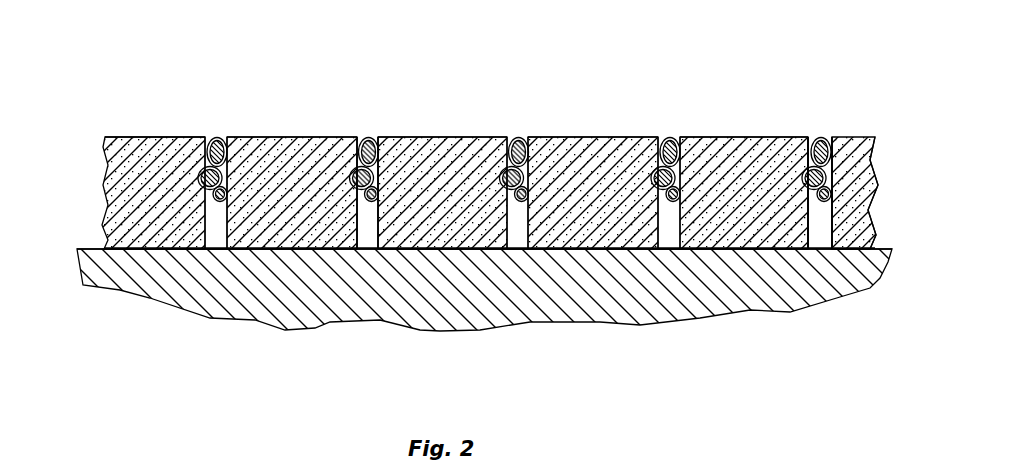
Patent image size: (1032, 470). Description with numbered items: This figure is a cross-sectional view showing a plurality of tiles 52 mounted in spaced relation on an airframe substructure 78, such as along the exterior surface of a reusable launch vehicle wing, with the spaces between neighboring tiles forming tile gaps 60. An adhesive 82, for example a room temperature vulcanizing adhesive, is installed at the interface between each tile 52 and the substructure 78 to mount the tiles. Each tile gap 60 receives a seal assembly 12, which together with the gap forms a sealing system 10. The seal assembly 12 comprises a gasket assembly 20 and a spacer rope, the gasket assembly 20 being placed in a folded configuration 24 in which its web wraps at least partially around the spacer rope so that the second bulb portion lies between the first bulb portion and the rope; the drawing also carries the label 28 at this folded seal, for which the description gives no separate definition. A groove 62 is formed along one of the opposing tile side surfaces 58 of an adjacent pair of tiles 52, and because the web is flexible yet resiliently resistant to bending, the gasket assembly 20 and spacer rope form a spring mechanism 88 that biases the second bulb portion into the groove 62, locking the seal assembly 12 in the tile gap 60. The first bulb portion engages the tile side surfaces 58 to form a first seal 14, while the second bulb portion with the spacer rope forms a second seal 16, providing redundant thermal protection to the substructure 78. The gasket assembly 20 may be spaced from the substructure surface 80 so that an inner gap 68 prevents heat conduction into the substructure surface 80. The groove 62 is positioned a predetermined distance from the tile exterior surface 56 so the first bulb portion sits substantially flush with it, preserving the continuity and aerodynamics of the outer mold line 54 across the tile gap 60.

The sealing system 10 is at (525, 128).
The seal assembly 12 is at (217, 138).
The first seal 14 is at (841, 138).
The second seal 16 is at (838, 215).
The gasket assembly 20 is at (865, 132).
The folded configuration 24 is at (865, 132).
The seal element 28 is at (865, 132).
The spring mechanism 88 is at (836, 137).
The tile 52 is at (118, 166).
The outer mold line 54 is at (456, 105).
The tile exterior surface 56 is at (163, 136).
The tile side surface 58 is at (238, 137).
The tile gap 60 is at (370, 222).
The groove 62 is at (187, 137).
The inner gap 68 is at (213, 215).
The substructure 78 is at (768, 292).
The substructure surface 80 is at (337, 250).
The adhesive 82 is at (722, 250).